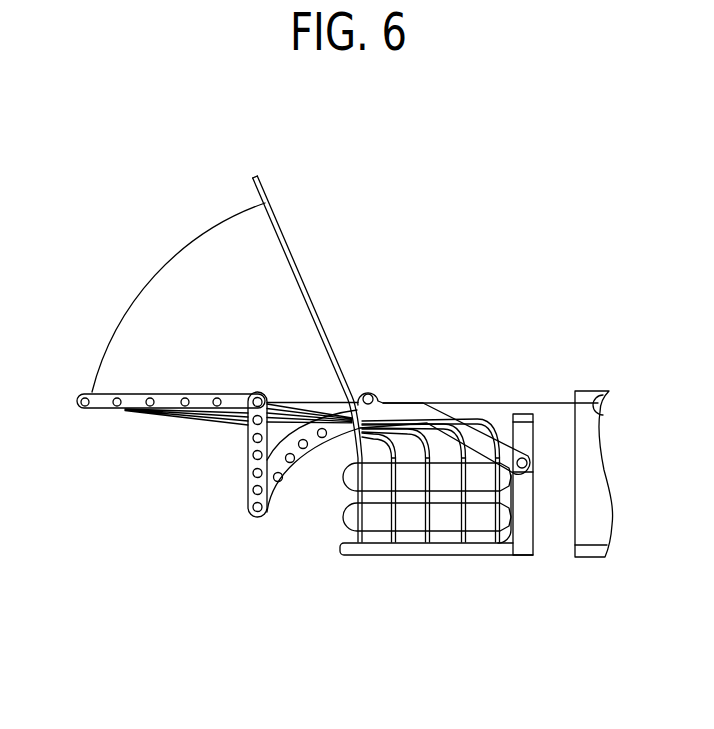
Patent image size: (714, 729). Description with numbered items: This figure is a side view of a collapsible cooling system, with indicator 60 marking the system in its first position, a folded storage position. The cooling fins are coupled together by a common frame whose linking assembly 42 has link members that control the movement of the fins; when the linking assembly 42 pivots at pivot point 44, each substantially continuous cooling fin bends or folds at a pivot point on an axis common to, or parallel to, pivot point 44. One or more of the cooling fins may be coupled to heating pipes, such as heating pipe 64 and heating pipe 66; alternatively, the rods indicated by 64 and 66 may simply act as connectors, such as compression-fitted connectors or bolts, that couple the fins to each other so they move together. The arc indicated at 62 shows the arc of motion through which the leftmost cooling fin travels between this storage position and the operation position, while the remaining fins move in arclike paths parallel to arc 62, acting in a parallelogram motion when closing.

The linking assembly 42 is at (247, 460).
The pivot point 44 is at (522, 475).
The collapsible cooling system in first storage position 60 is at (382, 263).
The arc of motion 62 is at (160, 270).
The heating pipe 64 is at (382, 477).
The heating pipe 66 is at (445, 518).